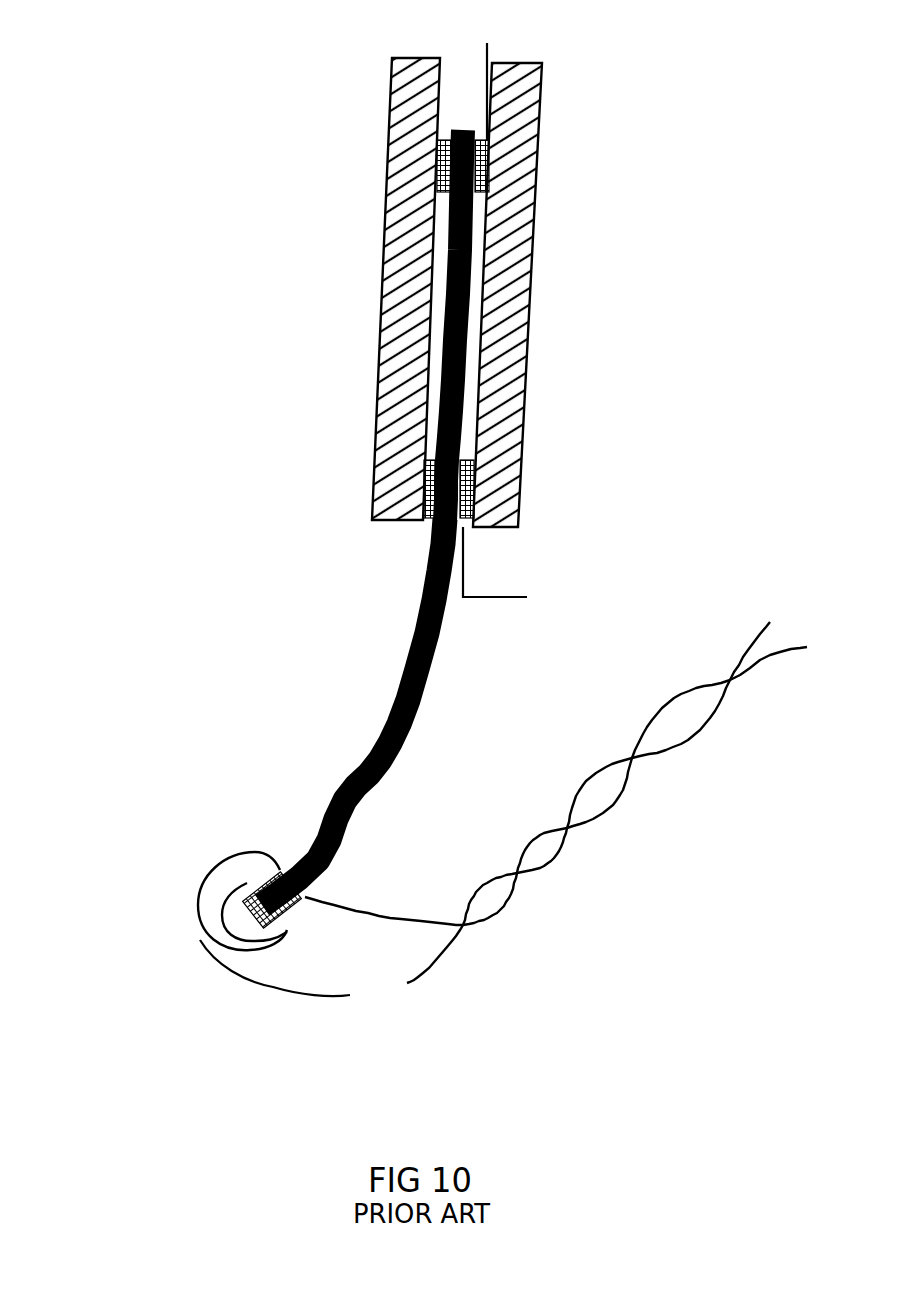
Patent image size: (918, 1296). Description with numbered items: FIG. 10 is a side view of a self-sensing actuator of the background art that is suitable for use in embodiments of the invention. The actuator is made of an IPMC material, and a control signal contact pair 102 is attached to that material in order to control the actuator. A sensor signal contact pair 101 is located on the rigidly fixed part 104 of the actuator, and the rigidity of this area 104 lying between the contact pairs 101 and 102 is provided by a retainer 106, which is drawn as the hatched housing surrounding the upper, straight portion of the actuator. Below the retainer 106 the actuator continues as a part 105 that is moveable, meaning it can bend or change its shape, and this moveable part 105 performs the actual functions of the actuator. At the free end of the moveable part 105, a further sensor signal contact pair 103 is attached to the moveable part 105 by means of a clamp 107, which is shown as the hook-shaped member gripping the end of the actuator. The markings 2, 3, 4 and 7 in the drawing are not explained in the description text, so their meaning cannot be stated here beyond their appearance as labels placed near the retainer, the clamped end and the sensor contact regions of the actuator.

The sensor signal contact pair 101 is at (505, 71).
The retainer 106 is at (518, 118).
The section indicator 4 is at (574, 223).
The rigidly fixed part 104 is at (467, 292).
The section indicator 2 is at (495, 565).
The control signal contact pair 102 is at (407, 730).
The moveable part 105 is at (631, 773).
The section indicator 7 is at (223, 920).
The end fitting 3 is at (305, 898).
The clamp 107 is at (186, 941).
The sensor signal contact pair 103 is at (331, 963).